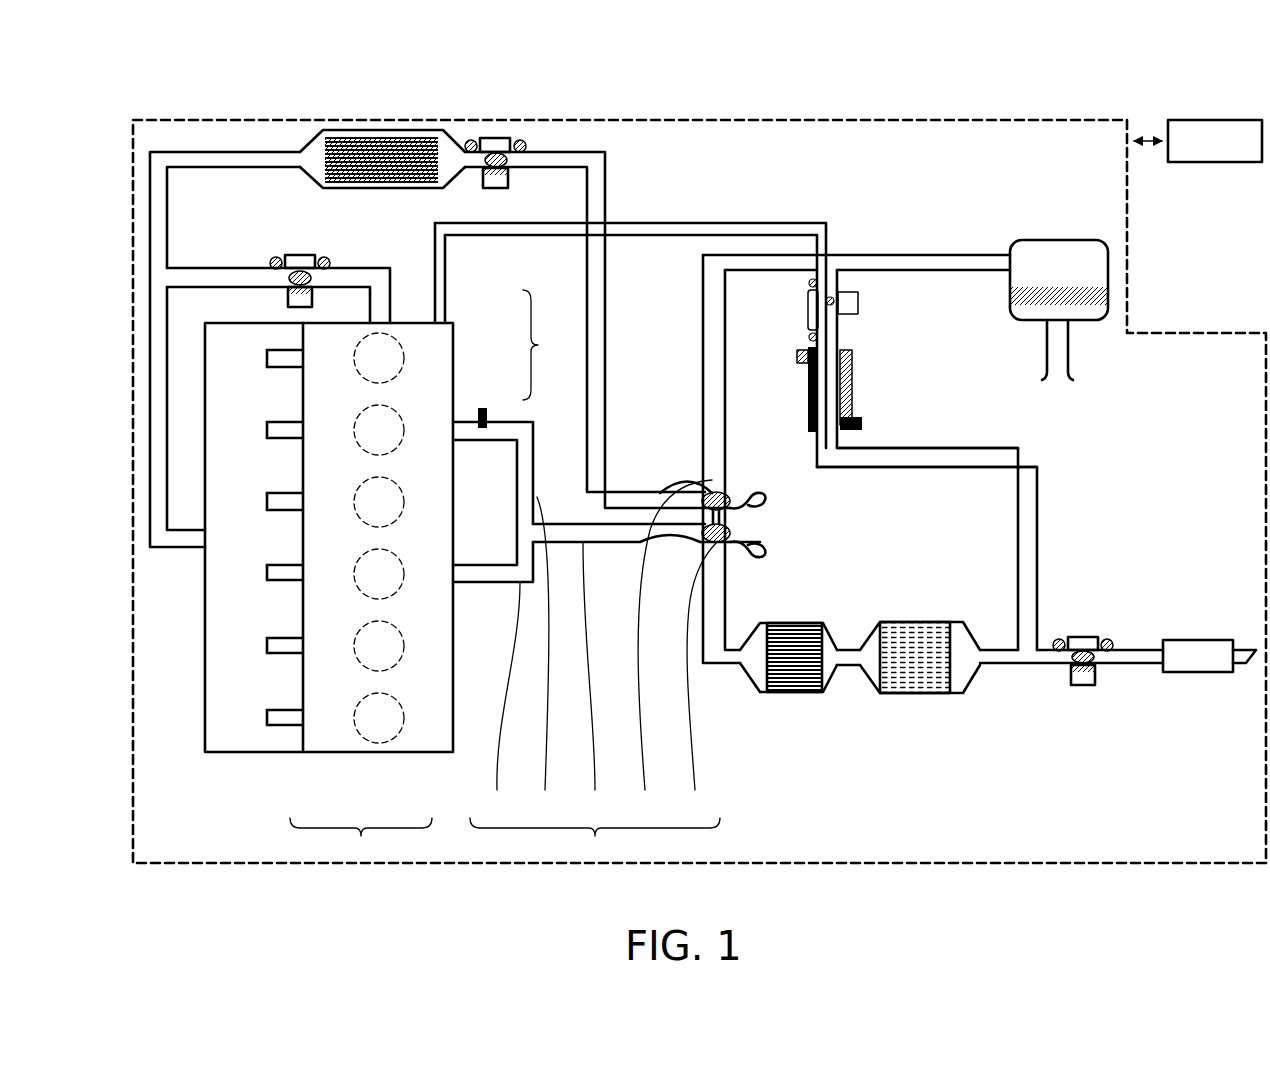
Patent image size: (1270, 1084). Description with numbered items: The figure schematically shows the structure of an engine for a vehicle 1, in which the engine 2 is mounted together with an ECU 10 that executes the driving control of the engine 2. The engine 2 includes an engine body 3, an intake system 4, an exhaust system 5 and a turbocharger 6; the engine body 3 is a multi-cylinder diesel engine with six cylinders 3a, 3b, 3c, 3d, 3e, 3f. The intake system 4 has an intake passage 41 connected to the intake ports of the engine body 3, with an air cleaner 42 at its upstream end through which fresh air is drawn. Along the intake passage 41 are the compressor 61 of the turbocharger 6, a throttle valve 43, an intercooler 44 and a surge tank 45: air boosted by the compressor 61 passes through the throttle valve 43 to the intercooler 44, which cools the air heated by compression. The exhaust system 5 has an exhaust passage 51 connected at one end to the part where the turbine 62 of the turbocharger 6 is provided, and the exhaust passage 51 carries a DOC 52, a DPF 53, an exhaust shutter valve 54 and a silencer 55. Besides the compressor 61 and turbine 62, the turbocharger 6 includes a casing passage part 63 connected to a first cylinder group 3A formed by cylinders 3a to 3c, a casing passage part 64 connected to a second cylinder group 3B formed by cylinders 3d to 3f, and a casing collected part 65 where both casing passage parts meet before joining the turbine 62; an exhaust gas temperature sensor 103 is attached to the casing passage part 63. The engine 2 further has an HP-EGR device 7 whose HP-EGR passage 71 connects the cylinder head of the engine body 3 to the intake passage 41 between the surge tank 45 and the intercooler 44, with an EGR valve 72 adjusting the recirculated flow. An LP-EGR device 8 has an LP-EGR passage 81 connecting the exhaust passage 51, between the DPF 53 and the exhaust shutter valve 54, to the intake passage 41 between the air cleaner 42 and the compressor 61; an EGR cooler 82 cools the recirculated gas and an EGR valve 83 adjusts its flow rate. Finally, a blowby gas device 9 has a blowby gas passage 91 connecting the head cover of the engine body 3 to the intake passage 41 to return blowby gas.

The vehicle 1 is at (1121, 88).
The engine 2 is at (820, 114).
The engine body 3 is at (429, 576).
The cylinder 3a is at (410, 352).
The cylinder 3b is at (407, 417).
The cylinder 3c is at (409, 485).
The cylinder 3d is at (356, 591).
The cylinder 3e is at (349, 662).
The cylinder 3f is at (410, 723).
The first cylinder group 3A is at (545, 345).
The second cylinder group 3B is at (361, 840).
The intake system 4 is at (240, 144).
The intake passage 41 is at (607, 170).
The air cleaner 42 is at (1048, 243).
The throttle valve 43 is at (500, 148).
The intercooler 44 is at (370, 128).
The surge tank 45 is at (205, 683).
The exhaust system 5 is at (1145, 670).
The exhaust passage 51 is at (703, 592).
The DOC 52 is at (790, 695).
The DPF 53 is at (912, 695).
The exhaust shutter valve 54 is at (1078, 656).
The silencer 55 is at (1197, 645).
The turbocharger 6 is at (595, 671).
The compressor 61 is at (672, 649).
The turbine 62 is at (699, 680).
The casing passage part 63 is at (544, 657).
The casing passage part 64 is at (499, 700).
The casing collected part 65 is at (594, 680).
The HP-EGR device 7 is at (215, 264).
The HP-EGR passage 71 is at (372, 266).
The EGR valve 72 is at (305, 258).
The LP-EGR device 8 is at (942, 460).
The LP-EGR passage 81 is at (960, 448).
The EGR cooler 82 is at (808, 400).
The EGR valve 83 is at (830, 306).
The blowby gas device 9 is at (630, 308).
The blowby gas passage 91 is at (722, 224).
The ECU 10 is at (1228, 165).
The exhaust gas temperature sensor 103 is at (490, 416).